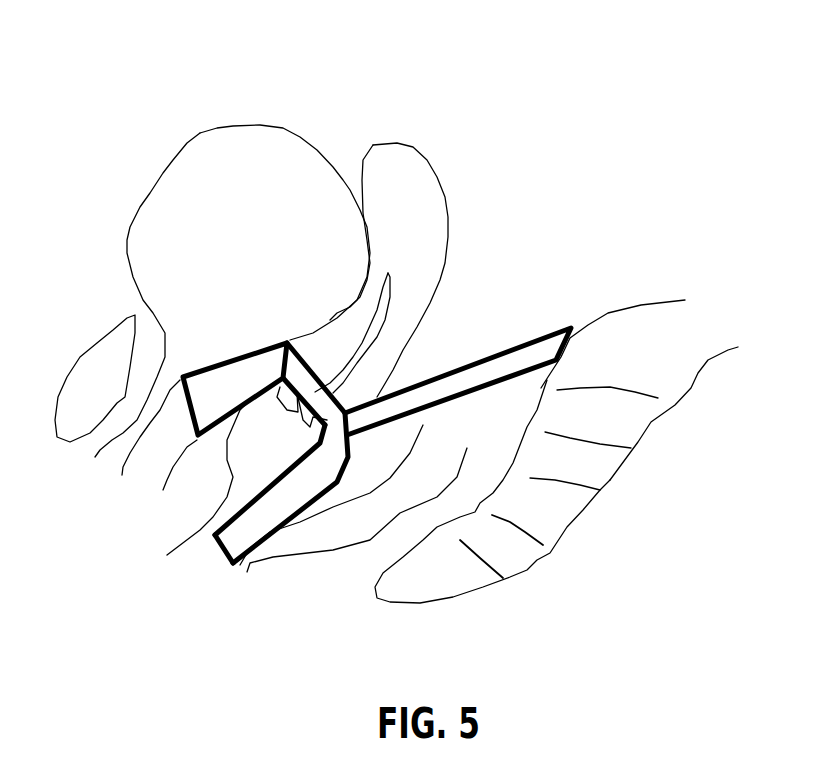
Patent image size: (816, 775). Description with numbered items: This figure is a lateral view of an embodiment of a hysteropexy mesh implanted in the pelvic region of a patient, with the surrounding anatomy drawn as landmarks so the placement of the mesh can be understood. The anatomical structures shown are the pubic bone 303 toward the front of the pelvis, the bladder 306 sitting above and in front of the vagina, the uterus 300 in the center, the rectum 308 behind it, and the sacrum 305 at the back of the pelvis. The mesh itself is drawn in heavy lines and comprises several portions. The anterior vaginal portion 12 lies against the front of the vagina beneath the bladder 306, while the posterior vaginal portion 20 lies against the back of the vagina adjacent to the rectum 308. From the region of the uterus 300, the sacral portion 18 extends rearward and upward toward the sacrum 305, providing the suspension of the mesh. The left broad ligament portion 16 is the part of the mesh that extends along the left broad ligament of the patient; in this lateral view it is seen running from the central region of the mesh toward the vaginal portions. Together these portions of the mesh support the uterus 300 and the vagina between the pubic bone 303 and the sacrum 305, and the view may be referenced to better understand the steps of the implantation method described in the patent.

The anterior vaginal portion 12 is at (187, 410).
The left broad ligament portion 16 is at (213, 532).
The sacral portion 18 is at (453, 372).
The posterior vaginal portion 20 is at (230, 560).
The uterus 300 is at (397, 143).
The pubic bone 303 is at (85, 352).
The sacrum 305 is at (585, 330).
The bladder 306 is at (200, 133).
The rectum 308 is at (333, 552).